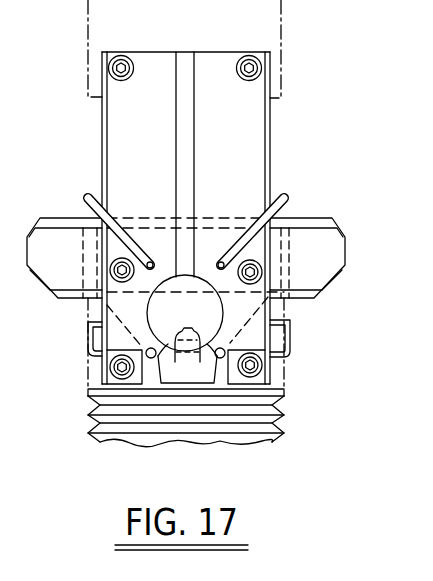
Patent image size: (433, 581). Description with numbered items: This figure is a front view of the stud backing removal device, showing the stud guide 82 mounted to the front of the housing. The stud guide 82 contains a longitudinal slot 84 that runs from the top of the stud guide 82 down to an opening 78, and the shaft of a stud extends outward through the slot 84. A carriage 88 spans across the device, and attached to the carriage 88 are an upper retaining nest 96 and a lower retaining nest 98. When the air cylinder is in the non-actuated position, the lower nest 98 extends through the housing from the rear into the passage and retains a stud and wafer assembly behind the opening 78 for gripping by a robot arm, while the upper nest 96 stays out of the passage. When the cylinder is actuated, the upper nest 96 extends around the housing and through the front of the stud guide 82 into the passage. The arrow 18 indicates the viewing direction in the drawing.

The coupling assembly 18 is at (348, 165).
The opening 78 is at (150, 303).
The stud guide 82 is at (158, 147).
The longitudinal slot 84 is at (173, 97).
The carriage 88 is at (333, 220).
The upper retaining nest 96 is at (108, 212).
The lower retaining nest 98 is at (86, 345).